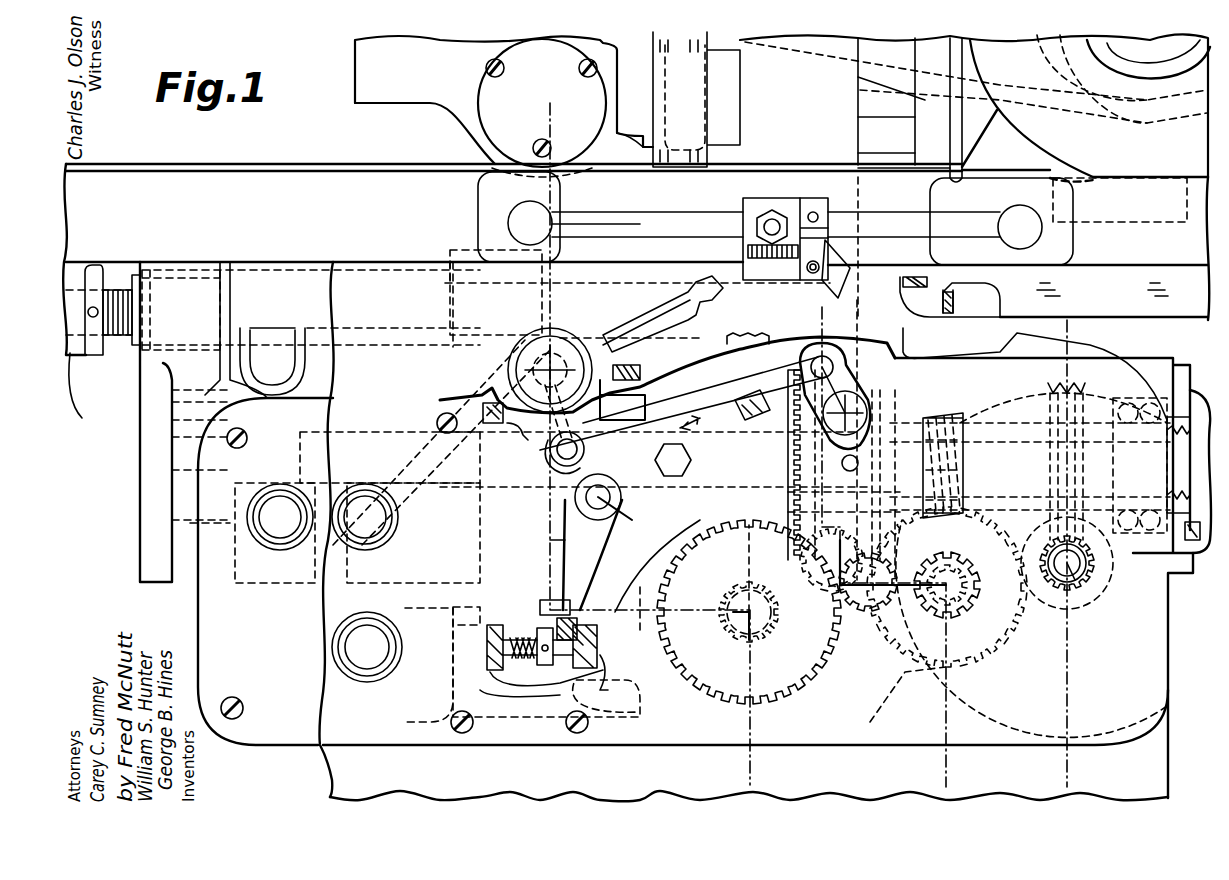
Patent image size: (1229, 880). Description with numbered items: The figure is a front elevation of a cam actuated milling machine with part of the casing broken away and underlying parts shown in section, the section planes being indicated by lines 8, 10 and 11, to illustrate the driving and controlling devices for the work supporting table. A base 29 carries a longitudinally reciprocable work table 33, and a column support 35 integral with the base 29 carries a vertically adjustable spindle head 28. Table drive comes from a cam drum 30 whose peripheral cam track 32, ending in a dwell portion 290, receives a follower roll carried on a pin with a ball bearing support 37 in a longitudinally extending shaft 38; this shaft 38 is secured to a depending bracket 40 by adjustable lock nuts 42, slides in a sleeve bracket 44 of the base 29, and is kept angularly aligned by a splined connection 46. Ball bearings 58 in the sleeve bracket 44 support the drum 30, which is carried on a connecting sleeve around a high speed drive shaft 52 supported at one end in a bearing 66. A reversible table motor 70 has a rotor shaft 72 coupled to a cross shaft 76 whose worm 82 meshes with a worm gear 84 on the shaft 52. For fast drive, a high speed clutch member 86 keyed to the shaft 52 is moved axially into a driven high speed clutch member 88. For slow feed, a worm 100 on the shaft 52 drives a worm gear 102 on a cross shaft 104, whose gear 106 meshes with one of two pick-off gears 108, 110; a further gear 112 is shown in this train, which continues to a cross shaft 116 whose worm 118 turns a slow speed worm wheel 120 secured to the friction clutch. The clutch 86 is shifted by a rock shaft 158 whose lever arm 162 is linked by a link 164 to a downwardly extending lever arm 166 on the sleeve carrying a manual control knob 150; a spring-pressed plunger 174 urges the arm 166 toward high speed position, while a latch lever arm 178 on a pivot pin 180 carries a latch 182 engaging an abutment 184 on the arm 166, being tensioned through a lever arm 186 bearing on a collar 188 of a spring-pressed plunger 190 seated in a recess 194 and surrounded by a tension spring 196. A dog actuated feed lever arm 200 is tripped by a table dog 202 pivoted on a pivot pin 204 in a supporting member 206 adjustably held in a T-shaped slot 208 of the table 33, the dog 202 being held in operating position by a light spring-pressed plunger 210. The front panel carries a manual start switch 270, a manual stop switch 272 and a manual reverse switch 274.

The section line 8- 8 is at (546, 120).
The section line 10- 10 is at (1065, 327).
The section line 11- 11 is at (820, 327).
The spindle head 28 is at (445, 105).
The base 29 is at (942, 282).
The cam drum 30 is at (430, 330).
The cam track 32 is at (270, 310).
The work table 33 is at (470, 208).
The column support 35 is at (655, 38).
The ball bearing support 37 is at (450, 248).
The longitudinally extending shaft 38 is at (955, 330).
The depending bracket 40 is at (96, 419).
The adjustable lock nuts 42 is at (93, 353).
The sleeve bracket 44 is at (157, 373).
The splined connection 46 is at (196, 278).
The high speed drive shaft 52 is at (170, 474).
The ball bearings 58 is at (190, 523).
The bearing 66 is at (1135, 430).
The reversible table motor 70 is at (1186, 698).
The rotor shaft 72 is at (1088, 552).
The cross shaft 76 is at (1078, 582).
The worm 82 is at (1094, 568).
The worm gear 84 is at (1054, 386).
The high speed clutch member 86 is at (806, 478).
The driven high speed clutch member 88 is at (788, 446).
The worm 100 is at (950, 414).
The worm gear 102 is at (993, 657).
The cross shaft 104 is at (972, 568).
The gear 106 is at (966, 608).
The pick-off gear 108 is at (808, 612).
The pick-off gear 110 is at (868, 552).
The gear 112 is at (816, 560).
The cross shaft 116 is at (760, 640).
The worm 118 is at (722, 630).
The slow speed worm wheel 120 is at (750, 340).
The manual control knob 150 is at (537, 354).
The rock shaft 158 is at (848, 412).
The lever arm 162 is at (838, 368).
The link 164 is at (720, 380).
The lever arm 166 is at (528, 448).
The spring-pressed plunger 174 is at (510, 387).
The latch lever arm 178 is at (620, 460).
The pivot pin 180 is at (638, 520).
The latch 182 is at (515, 286).
The abutment 184 is at (625, 393).
The lever arm 186 is at (577, 572).
The collar 188 is at (540, 632).
The spring-pressed plunger 190 is at (552, 668).
The recess 194 is at (645, 674).
The tension spring 196 is at (562, 683).
The dog actuated feed lever arm 200 is at (690, 295).
The table dog 202 is at (832, 288).
The pivot pin 204 is at (820, 264).
The supporting member 206 is at (800, 207).
The T-shaped slot 208 is at (636, 192).
The spring-pressed plunger 210 is at (773, 263).
The manual start switch 270 is at (374, 550).
The manual stop switch 272 is at (372, 630).
The manual reverse switch 274 is at (288, 552).
The dwell portion 290 is at (260, 393).